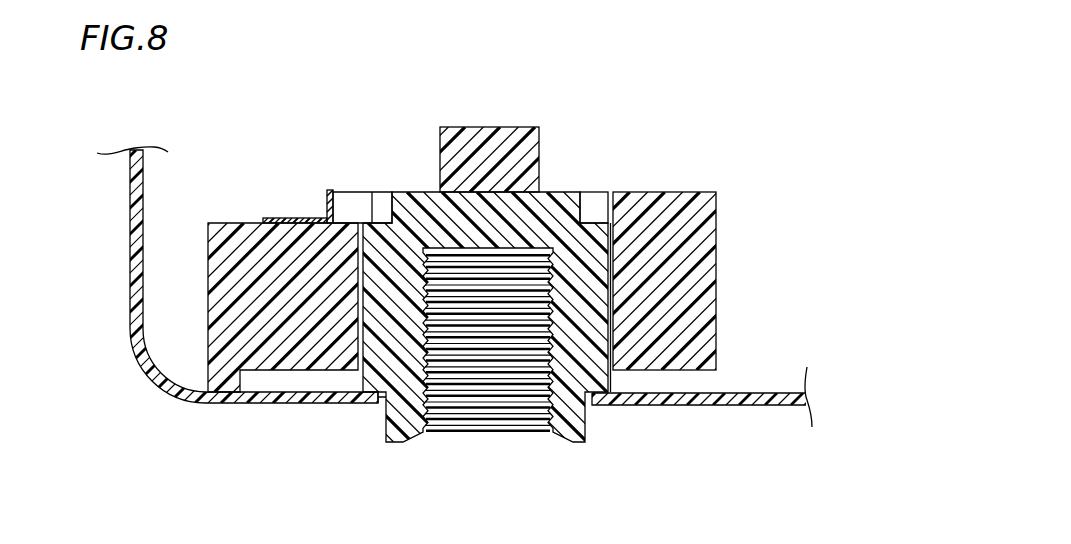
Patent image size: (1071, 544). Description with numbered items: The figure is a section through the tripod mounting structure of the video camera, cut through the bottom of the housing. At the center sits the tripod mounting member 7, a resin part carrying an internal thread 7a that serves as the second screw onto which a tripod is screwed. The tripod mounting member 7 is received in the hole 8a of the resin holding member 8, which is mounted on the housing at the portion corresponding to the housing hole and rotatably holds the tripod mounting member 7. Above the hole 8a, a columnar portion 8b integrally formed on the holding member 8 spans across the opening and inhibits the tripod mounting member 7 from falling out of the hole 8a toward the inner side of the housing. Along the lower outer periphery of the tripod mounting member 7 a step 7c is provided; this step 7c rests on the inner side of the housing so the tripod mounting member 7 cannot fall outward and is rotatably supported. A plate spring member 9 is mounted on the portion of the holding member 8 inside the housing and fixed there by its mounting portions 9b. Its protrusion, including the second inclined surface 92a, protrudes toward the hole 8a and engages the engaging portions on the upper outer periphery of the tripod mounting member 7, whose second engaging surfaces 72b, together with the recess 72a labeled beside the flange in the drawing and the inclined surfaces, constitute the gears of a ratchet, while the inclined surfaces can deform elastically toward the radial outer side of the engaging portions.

The tripod mounting member 7 is at (495, 372).
The internal thread 7a is at (512, 283).
The step 7c is at (603, 397).
The holding member 8 is at (677, 223).
The hole 8a is at (606, 262).
The columnar portion 8b is at (495, 165).
The plate spring member 9 is at (327, 200).
The mounting portions 9b is at (280, 220).
The first recess of nut 72a is at (387, 207).
The second engaging surface 72b is at (593, 203).
The second inclined surface 92a is at (350, 207).